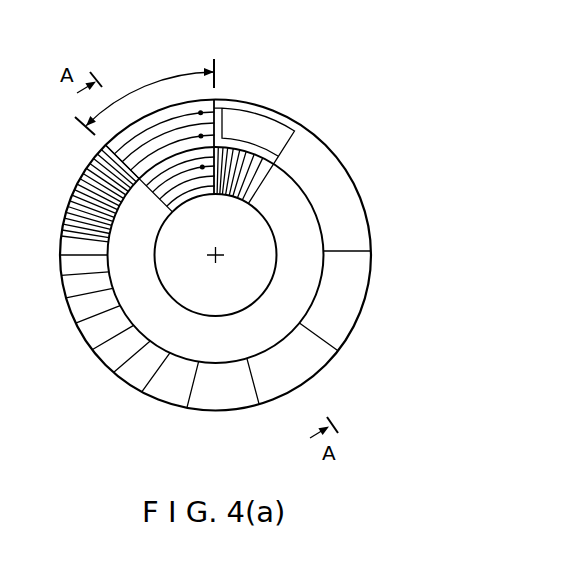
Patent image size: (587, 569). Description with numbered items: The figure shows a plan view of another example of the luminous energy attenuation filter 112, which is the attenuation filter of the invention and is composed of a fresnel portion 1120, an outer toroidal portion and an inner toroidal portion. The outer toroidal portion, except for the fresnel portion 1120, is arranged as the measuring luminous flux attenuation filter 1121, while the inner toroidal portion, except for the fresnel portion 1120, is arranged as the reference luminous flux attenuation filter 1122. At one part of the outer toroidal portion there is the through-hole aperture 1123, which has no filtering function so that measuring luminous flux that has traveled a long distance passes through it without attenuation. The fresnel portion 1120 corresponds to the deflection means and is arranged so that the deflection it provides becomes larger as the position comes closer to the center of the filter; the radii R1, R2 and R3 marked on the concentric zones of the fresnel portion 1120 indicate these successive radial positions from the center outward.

The luminous energy attenuation filter 112 is at (335, 383).
The fresnel portion 1120 is at (201, 113).
The measuring luminous flux attenuation filter 1121 is at (348, 278).
The reference luminous flux attenuation filter 1122 is at (298, 225).
The through-hole aperture 1123 is at (277, 130).
The radius R1 is at (202, 167).
The radius R2 is at (201, 136).
The radius R3 is at (201, 113).